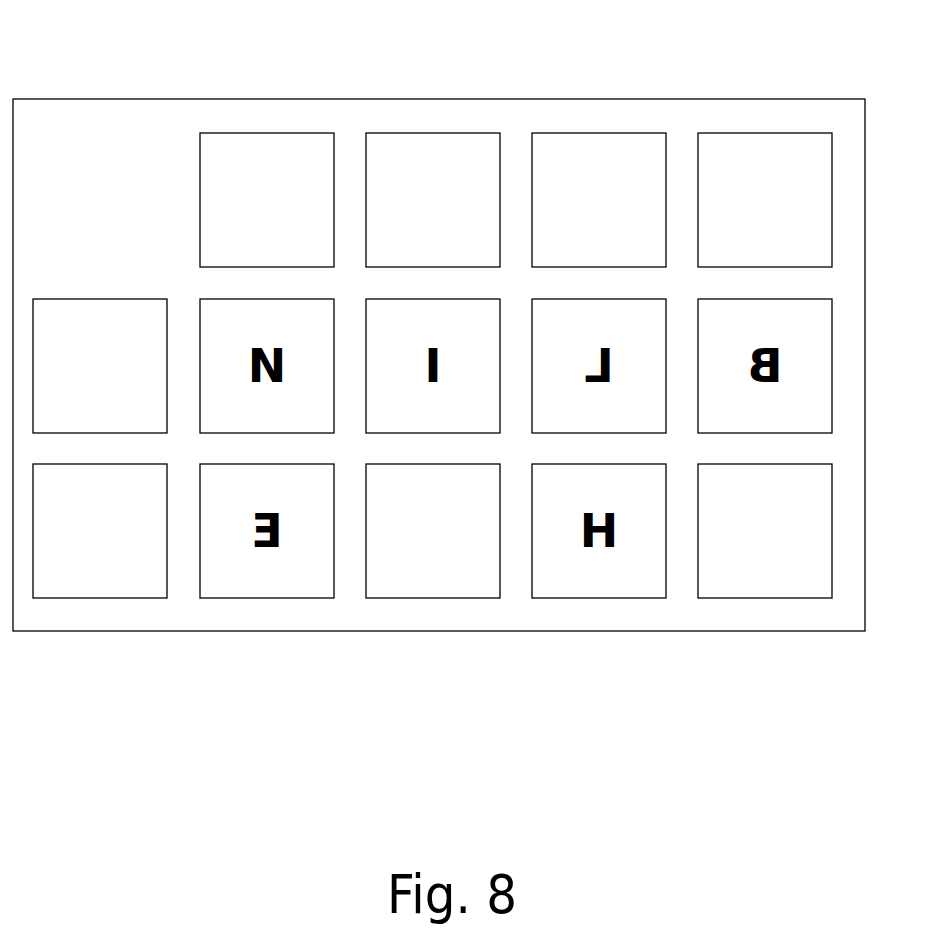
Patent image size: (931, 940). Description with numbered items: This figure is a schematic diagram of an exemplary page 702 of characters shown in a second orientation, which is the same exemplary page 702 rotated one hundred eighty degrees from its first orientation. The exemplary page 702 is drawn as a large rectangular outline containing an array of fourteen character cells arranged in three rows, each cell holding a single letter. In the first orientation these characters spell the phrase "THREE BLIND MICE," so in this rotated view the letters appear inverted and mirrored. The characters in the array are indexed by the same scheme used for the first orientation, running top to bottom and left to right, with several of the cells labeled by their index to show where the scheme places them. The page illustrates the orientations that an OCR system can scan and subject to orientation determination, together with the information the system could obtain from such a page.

The exemplary page 702 is at (130, 98).